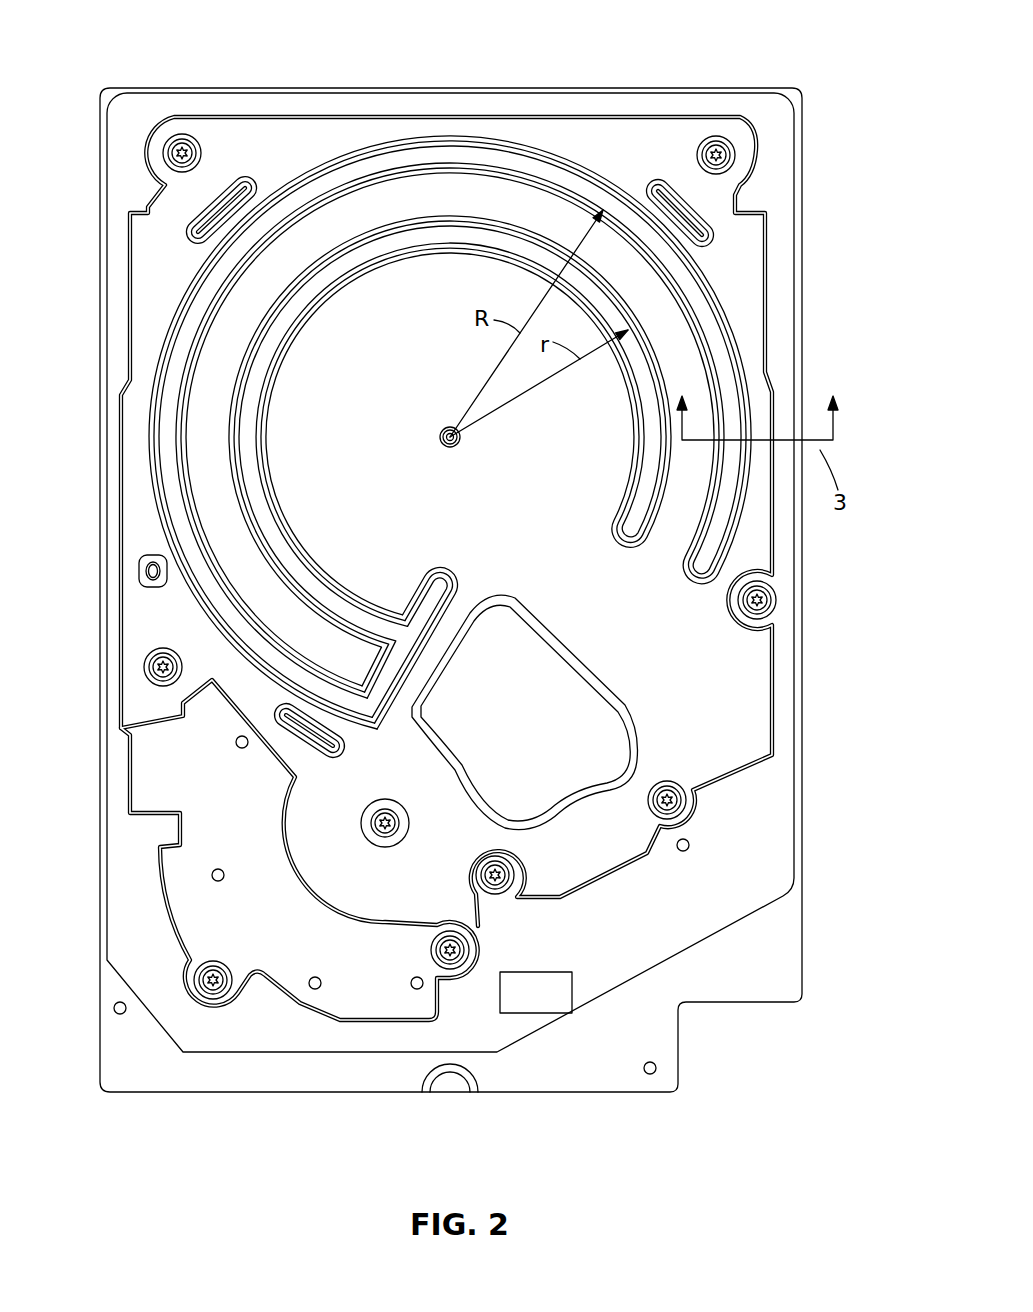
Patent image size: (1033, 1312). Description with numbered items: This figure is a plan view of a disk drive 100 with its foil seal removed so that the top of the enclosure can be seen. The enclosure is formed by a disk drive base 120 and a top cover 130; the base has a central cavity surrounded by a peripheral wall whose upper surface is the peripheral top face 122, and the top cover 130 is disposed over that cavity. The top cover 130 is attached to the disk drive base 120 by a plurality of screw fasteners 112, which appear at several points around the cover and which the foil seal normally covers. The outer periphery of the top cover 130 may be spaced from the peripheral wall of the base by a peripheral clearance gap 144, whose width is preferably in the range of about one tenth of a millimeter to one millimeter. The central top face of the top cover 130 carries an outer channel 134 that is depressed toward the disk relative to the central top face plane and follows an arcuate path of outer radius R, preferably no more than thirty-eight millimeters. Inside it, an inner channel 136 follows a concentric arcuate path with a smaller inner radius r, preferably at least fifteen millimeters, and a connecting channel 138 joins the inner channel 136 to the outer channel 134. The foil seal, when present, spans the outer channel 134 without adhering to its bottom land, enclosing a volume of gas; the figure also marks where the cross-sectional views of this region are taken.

The disk drive 100 is at (772, 42).
The screw fasteners 112 is at (182, 134).
The disk drive base 120 is at (803, 843).
The peripheral top face 122 is at (368, 105).
The top cover 130 is at (388, 425).
The outer channel 134 is at (580, 192).
The inner channel 136 is at (432, 243).
The connecting channel 138 is at (397, 668).
The peripheral clearance gap 144 is at (772, 310).